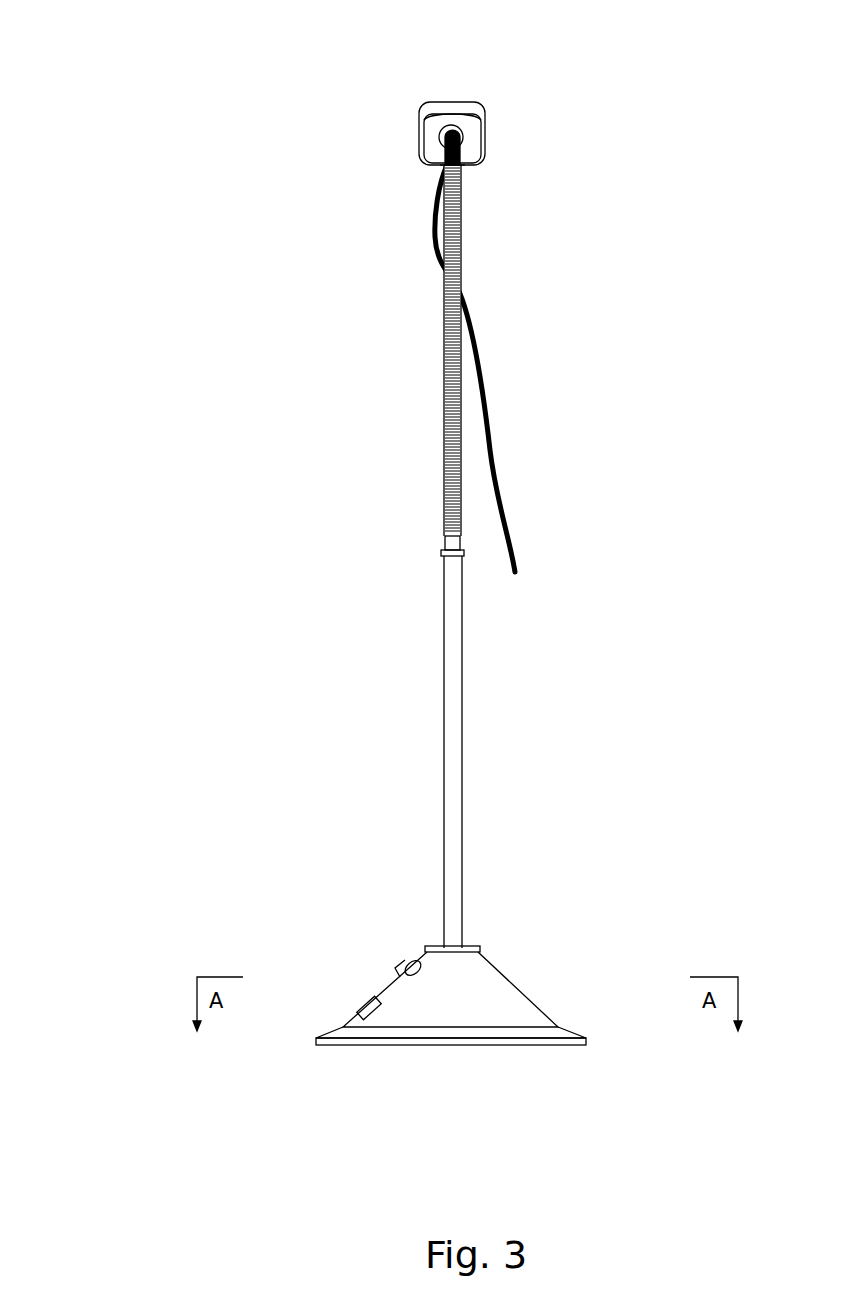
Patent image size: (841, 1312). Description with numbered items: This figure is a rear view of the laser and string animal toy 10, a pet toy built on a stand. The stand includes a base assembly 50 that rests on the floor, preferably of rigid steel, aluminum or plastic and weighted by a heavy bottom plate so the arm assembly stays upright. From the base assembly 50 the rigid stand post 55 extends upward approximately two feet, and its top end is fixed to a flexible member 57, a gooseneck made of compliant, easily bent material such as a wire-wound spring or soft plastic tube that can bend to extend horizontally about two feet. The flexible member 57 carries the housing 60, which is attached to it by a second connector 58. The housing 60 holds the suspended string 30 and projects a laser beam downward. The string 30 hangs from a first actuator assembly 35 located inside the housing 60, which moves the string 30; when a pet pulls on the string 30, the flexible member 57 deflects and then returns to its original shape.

The laser and string animal toy 10 is at (157, 145).
The string 30 is at (490, 470).
The first actuator assembly 35 is at (440, 165).
The base assembly 50 is at (522, 990).
The stand post 55 is at (454, 741).
The flexible member 57 is at (461, 226).
The second connector 58 is at (463, 133).
The housing 60 is at (482, 115).